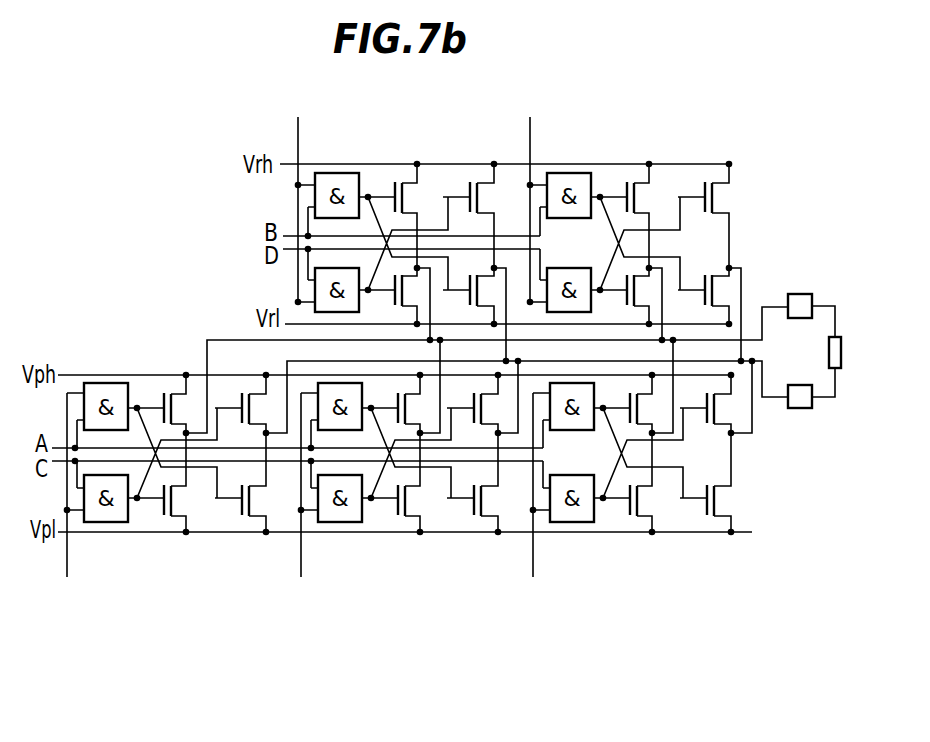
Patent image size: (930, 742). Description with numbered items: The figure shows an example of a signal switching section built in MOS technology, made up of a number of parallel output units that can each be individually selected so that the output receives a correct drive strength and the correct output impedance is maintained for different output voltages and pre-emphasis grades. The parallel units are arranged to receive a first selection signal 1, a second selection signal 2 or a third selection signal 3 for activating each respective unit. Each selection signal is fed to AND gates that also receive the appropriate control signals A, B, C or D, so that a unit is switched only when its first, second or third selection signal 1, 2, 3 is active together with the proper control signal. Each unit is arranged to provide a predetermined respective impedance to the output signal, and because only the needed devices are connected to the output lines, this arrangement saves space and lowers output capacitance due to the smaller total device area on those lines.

The SEL1 select line and switching cells 1 is at (389, 348).
The SEL2 select line and switching cells 2 is at (619, 348).
The SEL3 select line and switching cell 3 is at (156, 492).